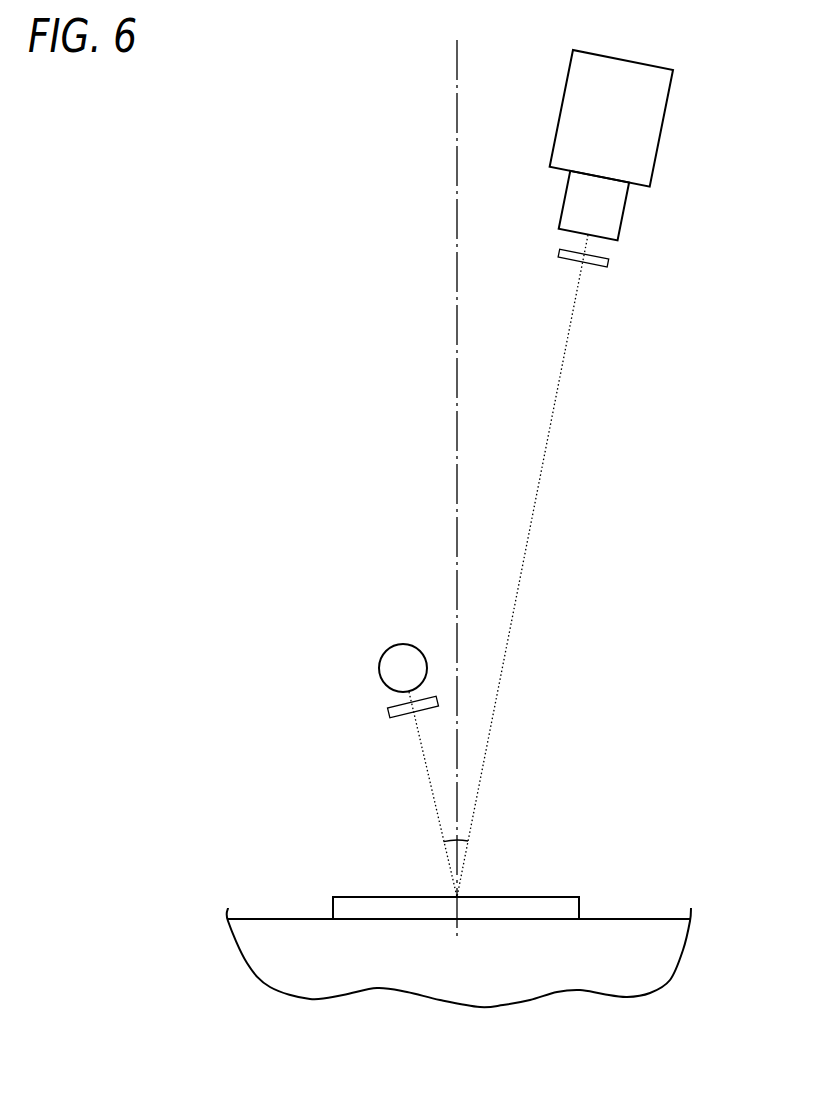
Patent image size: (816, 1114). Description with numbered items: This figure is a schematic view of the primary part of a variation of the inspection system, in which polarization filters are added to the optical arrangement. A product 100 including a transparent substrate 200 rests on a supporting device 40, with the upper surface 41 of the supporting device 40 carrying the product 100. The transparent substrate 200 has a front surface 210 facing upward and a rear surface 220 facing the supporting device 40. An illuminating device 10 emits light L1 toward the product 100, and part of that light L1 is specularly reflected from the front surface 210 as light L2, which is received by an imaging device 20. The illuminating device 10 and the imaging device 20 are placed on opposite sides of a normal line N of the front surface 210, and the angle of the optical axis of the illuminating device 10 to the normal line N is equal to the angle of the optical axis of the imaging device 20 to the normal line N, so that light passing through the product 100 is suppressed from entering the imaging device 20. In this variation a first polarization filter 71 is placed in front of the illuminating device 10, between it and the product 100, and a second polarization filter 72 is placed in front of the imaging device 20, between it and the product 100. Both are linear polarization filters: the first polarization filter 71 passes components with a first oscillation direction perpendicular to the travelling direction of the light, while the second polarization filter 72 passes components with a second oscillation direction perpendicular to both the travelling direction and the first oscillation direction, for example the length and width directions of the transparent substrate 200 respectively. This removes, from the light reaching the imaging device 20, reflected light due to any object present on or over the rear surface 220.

The illuminating device 10 is at (398, 650).
The imaging device 20 is at (652, 130).
The first polarization filter 71 is at (388, 712).
The second polarization filter 72 is at (608, 265).
The supporting device 40 is at (647, 963).
The stage surface 41 is at (643, 918).
The product 100 is at (382, 907).
The transparent substrate 200 is at (565, 905).
The front surface 210 is at (510, 895).
The rear surface 220 is at (517, 922).
The normal line N is at (455, 370).
The light from the illuminating device L1 is at (422, 752).
The specularly reflected light L2 is at (538, 486).